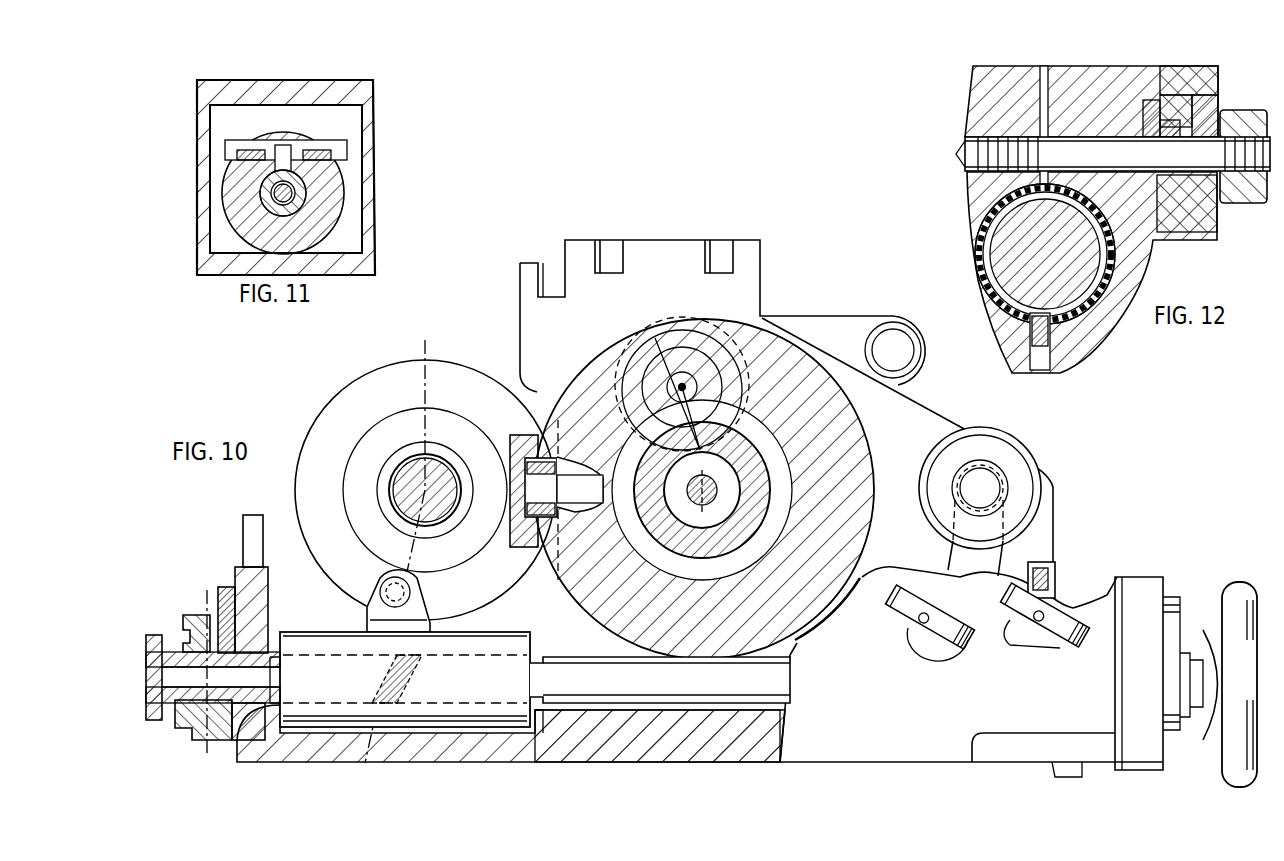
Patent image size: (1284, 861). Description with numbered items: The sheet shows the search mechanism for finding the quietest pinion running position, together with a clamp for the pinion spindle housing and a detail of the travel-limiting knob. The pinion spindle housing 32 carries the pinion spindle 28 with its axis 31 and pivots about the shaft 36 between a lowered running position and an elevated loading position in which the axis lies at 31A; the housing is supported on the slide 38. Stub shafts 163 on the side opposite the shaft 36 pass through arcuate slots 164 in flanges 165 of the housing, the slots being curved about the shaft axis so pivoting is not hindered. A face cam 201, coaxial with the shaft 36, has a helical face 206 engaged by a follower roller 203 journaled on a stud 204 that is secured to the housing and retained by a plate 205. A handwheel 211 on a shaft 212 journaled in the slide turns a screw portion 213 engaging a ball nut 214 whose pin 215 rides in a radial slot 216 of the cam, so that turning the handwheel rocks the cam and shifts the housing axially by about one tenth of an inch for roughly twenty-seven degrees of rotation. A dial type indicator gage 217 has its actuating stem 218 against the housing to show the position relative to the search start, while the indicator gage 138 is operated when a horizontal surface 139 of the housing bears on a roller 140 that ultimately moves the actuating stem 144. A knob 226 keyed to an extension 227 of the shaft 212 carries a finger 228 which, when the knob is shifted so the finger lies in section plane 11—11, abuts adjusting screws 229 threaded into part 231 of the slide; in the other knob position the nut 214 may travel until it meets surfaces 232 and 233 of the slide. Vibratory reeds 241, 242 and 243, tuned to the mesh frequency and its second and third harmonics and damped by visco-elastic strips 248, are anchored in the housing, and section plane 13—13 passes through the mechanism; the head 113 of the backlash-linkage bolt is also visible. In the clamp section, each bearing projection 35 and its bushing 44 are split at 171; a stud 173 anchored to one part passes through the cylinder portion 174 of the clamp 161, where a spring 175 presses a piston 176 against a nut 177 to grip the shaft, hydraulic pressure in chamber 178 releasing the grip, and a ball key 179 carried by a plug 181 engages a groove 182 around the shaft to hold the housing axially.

In FIG. 10, the section plane 11— 11 is at (199, 601).
In FIG. 10, the section plane 13— 13 is at (416, 346).
In FIG. 10, the pinion spindle 28 is at (752, 535).
In FIG. 10, the spindle axis 31 is at (718, 490).
In FIG. 10, the elevated spindle axis position 31A is at (688, 387).
In FIG. 10, the pinion spindle housing 32 is at (707, 624).
In FIG. 12, the bearing projection 35 is at (1012, 82).
In FIG. 12, the shaft 36 is at (1005, 265).
In FIG. 10, the shaft 36 is at (405, 482).
In FIG. 10, the slide 38 is at (668, 748).
In FIG. 12, the bushing 44 is at (1090, 258).
In FIG. 10, the bolt head 113 is at (885, 348).
In FIG. 10, the indicator gage 138 is at (1047, 632).
In FIG. 10, the horizontal surface 139 is at (1043, 565).
In FIG. 10, the roller 140 is at (1052, 590).
In FIG. 10, the actuating stem 144 is at (1025, 620).
In FIG. 12, the clamp 161 is at (1105, 60).
In FIG. 10, the stub shaft 163 is at (1000, 470).
In FIG. 10, the arcuate slot 164 is at (960, 562).
In FIG. 10, the flange 165 is at (930, 530).
In FIG. 12, the split 171 is at (1040, 105).
In FIG. 12, the stud 173 is at (1248, 160).
In FIG. 12, the cylinder portion 174 is at (1218, 73).
In FIG. 12, the spring 175 is at (1145, 110).
In FIG. 12, the piston 176 is at (1200, 100).
In FIG. 12, the nut 177 is at (1228, 200).
In FIG. 12, the cylinder chamber 178 is at (1185, 228).
In FIG. 12, the ball key 179 is at (1055, 315).
In FIG. 12, the plug 181 is at (1043, 355).
In FIG. 12, the groove 182 is at (1045, 254).
In FIG. 10, the face cam 201 is at (524, 400).
In FIG. 10, the follower roller 203 is at (522, 545).
In FIG. 10, the stud 204 is at (575, 495).
In FIG. 10, the plate 205 is at (522, 440).
In FIG. 10, the cam face 206 is at (470, 382).
In FIG. 10, the handwheel 211 is at (1238, 605).
In FIG. 10, the shaft 212 is at (765, 686).
In FIG. 10, the screw portion 213 is at (420, 708).
In FIG. 10, the ball nut 214 is at (452, 685).
In FIG. 10, the pin 215 is at (385, 584).
In FIG. 10, the radial slot 216 is at (398, 635).
In FIG. 10, the dial type indicator gage 217 is at (893, 613).
In FIG. 10, the actuating stem 218 is at (940, 633).
In FIG. 11, the knob 226 is at (300, 198).
In FIG. 10, the knob 226 is at (190, 633).
In FIG. 11, the shaft extension 227 is at (283, 193).
In FIG. 10, the shaft extension 227 is at (158, 663).
In FIG. 11, the finger 228 is at (300, 152).
In FIG. 10, the finger 228 is at (270, 620).
In FIG. 11, the adjusting screws 229 is at (248, 152).
In FIG. 10, the adjusting screws 229 is at (224, 598).
In FIG. 11, the slide part 231 is at (232, 187).
In FIG. 10, the slide part 231 is at (188, 727).
In FIG. 10, the surface 232 is at (285, 760).
In FIG. 10, the surface 233 is at (540, 727).
In FIG. 10, the vibratory reed 241 is at (549, 283).
In FIG. 10, the vibratory reed 242 is at (610, 265).
In FIG. 10, the vibratory reed 243 is at (722, 265).
In FIG. 10, the damping strips 248 is at (540, 282).